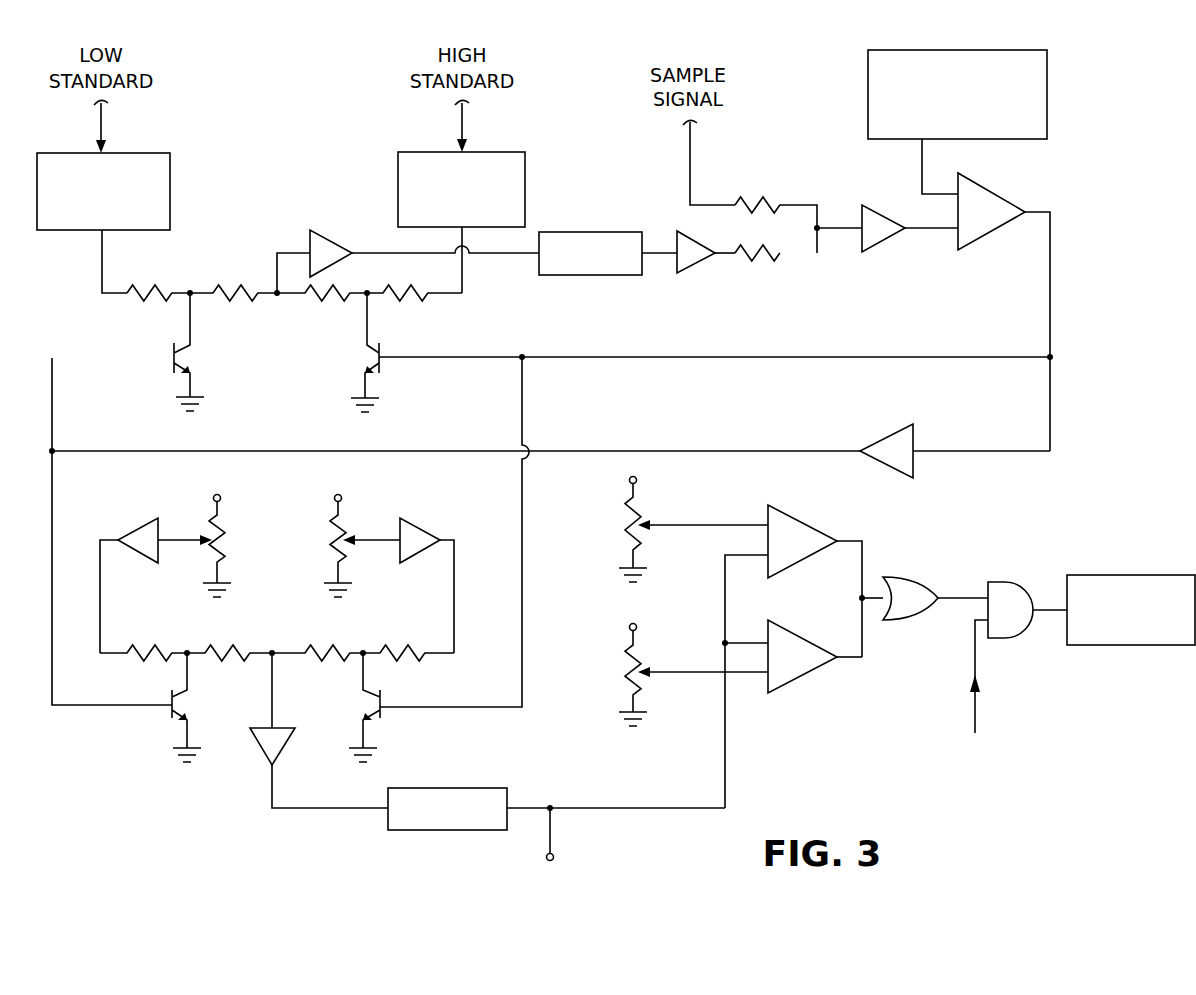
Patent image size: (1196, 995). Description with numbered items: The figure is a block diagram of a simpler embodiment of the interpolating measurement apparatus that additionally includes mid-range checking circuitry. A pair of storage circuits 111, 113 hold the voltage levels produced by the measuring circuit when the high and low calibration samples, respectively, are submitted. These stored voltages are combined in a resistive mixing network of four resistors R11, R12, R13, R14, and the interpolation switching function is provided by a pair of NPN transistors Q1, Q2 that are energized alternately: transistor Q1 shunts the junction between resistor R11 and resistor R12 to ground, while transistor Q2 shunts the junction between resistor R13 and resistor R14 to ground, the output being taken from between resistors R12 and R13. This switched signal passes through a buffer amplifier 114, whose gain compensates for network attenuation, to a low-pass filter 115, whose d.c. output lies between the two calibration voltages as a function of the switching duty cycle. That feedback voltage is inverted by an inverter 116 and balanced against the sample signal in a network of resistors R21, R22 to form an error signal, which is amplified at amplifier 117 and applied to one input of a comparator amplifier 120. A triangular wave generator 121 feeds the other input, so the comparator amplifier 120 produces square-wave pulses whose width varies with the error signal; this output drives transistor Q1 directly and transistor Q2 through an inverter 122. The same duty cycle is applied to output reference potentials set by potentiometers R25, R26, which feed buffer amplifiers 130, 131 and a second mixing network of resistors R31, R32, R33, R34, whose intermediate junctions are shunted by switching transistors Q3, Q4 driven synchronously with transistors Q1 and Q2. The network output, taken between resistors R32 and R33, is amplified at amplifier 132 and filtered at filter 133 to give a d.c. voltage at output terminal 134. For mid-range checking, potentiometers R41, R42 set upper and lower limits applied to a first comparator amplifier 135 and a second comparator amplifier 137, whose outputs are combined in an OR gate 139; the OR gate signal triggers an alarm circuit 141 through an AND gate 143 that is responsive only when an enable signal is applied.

The storage circuit 111 is at (525, 183).
The storage circuit 113 is at (170, 183).
The buffer amplifier 114 is at (353, 210).
The low-pass filter 115 is at (592, 275).
The inverter 116 is at (695, 272).
The amplifier 117 is at (870, 252).
The comparator amplifier 120 is at (1000, 200).
The triangular wave generator 121 is at (1047, 83).
The inverter 122 is at (880, 440).
The buffer amplifier 130 is at (416, 520).
The buffer amplifier 131 is at (150, 518).
The amplifier 132 is at (263, 760).
The filter 133 is at (475, 770).
The output terminal 134 is at (555, 855).
The first comparator amplifier 135 is at (798, 522).
The second comparator amplifier 137 is at (800, 680).
The OR gate 139 is at (900, 577).
The alarm circuit 141 is at (1127, 575).
The AND gate 143 is at (1005, 582).
The resistor R11 is at (405, 300).
The resistor R12 is at (344, 300).
The resistor R13 is at (230, 300).
The resistor R14 is at (148, 300).
The resistor R21 is at (748, 195).
The resistor R22 is at (760, 262).
The potentiometer R25 is at (330, 537).
The potentiometer R26 is at (222, 512).
The resistor R31 is at (425, 645).
The resistor R32 is at (347, 645).
The resistor R33 is at (248, 645).
The resistor R34 is at (167, 645).
The potentiometer R41 is at (628, 502).
The potentiometer R42 is at (622, 672).
The NPN transistor Q1 is at (385, 372).
The NPN transistor Q2 is at (170, 374).
The NPN switching transistor Q3 is at (385, 712).
The NPN switching transistor Q4 is at (167, 714).